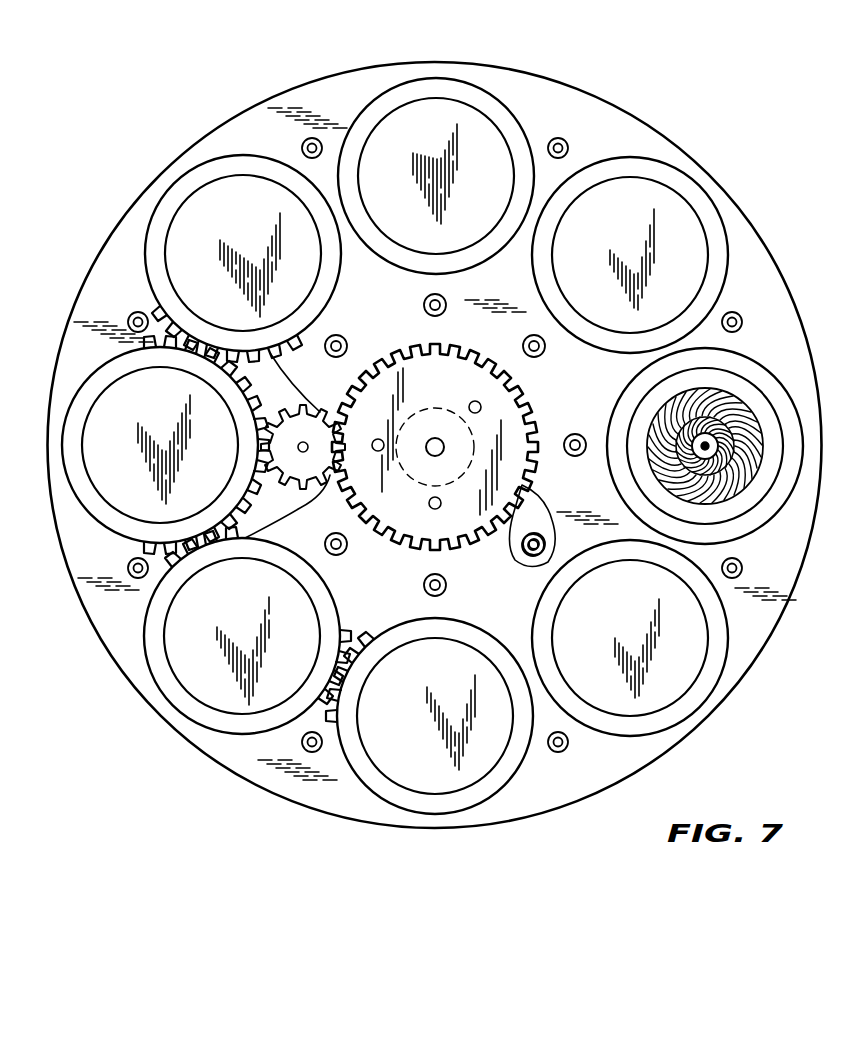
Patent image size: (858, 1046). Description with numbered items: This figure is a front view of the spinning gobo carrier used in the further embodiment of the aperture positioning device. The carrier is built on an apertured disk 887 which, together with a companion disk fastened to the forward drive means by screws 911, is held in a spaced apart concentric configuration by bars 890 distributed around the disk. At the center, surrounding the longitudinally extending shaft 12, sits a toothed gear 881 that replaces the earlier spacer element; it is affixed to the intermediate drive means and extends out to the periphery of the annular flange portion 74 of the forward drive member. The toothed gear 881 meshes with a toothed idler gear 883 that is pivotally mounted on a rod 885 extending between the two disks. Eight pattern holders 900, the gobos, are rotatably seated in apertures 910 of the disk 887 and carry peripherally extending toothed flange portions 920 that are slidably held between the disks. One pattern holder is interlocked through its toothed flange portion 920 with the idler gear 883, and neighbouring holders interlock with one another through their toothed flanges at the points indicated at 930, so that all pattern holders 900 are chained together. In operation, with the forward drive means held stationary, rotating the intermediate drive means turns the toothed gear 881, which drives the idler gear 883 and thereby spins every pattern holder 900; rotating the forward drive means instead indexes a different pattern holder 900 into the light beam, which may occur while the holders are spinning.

The longitudinally extending shaft 12 is at (430, 452).
The forward annular flange portion 74 is at (511, 540).
The toothed gear 881 is at (448, 395).
The toothed idler gear 883 is at (303, 413).
The rod 885 is at (330, 478).
The apertured disk 887 is at (712, 708).
The bars 890 is at (565, 143).
The pattern holders 900 is at (268, 181).
The apertures 910 is at (607, 733).
The screws 911 is at (360, 115).
The peripherally extending toothed flange portions 920 is at (258, 448).
The interlock of toothed flanges of adjacent pattern holders 930 is at (213, 338).